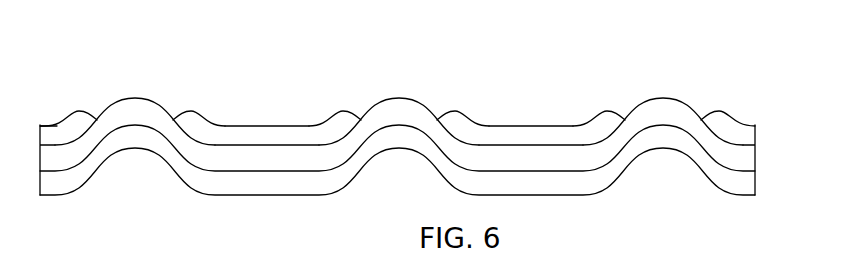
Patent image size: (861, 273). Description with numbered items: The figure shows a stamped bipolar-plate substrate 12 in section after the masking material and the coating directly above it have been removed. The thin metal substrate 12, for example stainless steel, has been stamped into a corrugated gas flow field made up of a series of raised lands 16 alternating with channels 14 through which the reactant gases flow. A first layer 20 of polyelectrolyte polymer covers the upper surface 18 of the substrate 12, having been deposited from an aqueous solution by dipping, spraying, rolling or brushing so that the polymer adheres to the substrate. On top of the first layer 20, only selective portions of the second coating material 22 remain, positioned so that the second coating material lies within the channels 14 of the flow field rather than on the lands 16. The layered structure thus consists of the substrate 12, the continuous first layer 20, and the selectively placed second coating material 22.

The substrate 12 is at (743, 183).
The channels 14 is at (243, 106).
The lands 16 is at (135, 86).
The upper surface 18 is at (84, 167).
The first layer 20 is at (743, 153).
The second coating material 22 is at (64, 133).